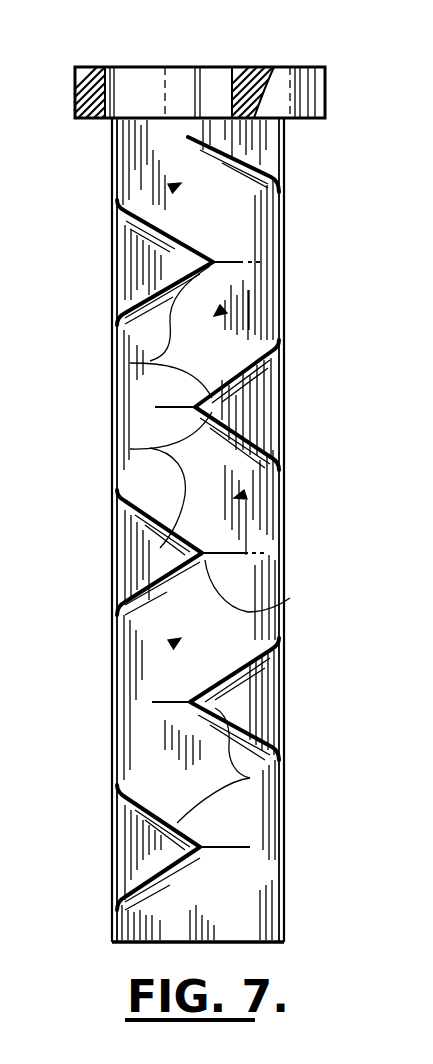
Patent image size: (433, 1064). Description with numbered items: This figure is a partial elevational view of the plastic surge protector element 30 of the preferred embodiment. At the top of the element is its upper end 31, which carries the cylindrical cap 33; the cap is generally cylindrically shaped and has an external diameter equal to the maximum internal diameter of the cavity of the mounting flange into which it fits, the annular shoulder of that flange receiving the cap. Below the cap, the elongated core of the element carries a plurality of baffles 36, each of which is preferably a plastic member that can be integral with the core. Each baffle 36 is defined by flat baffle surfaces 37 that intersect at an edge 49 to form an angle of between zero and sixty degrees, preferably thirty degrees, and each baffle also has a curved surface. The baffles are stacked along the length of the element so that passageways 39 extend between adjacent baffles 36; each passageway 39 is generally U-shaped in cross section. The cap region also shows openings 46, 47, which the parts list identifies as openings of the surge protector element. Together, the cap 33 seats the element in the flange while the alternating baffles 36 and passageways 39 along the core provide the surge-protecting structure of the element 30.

The plastic surge protector element 30 is at (112, 784).
The upper end 31 is at (76, 106).
The cylindrical cap 33 is at (325, 82).
The baffle 36 is at (116, 272).
The baffle surfaces 37 is at (122, 211).
The passageway 39 is at (175, 187).
The opening 46 is at (135, 85).
The opening 47 is at (277, 83).
The edge 49 is at (216, 262).